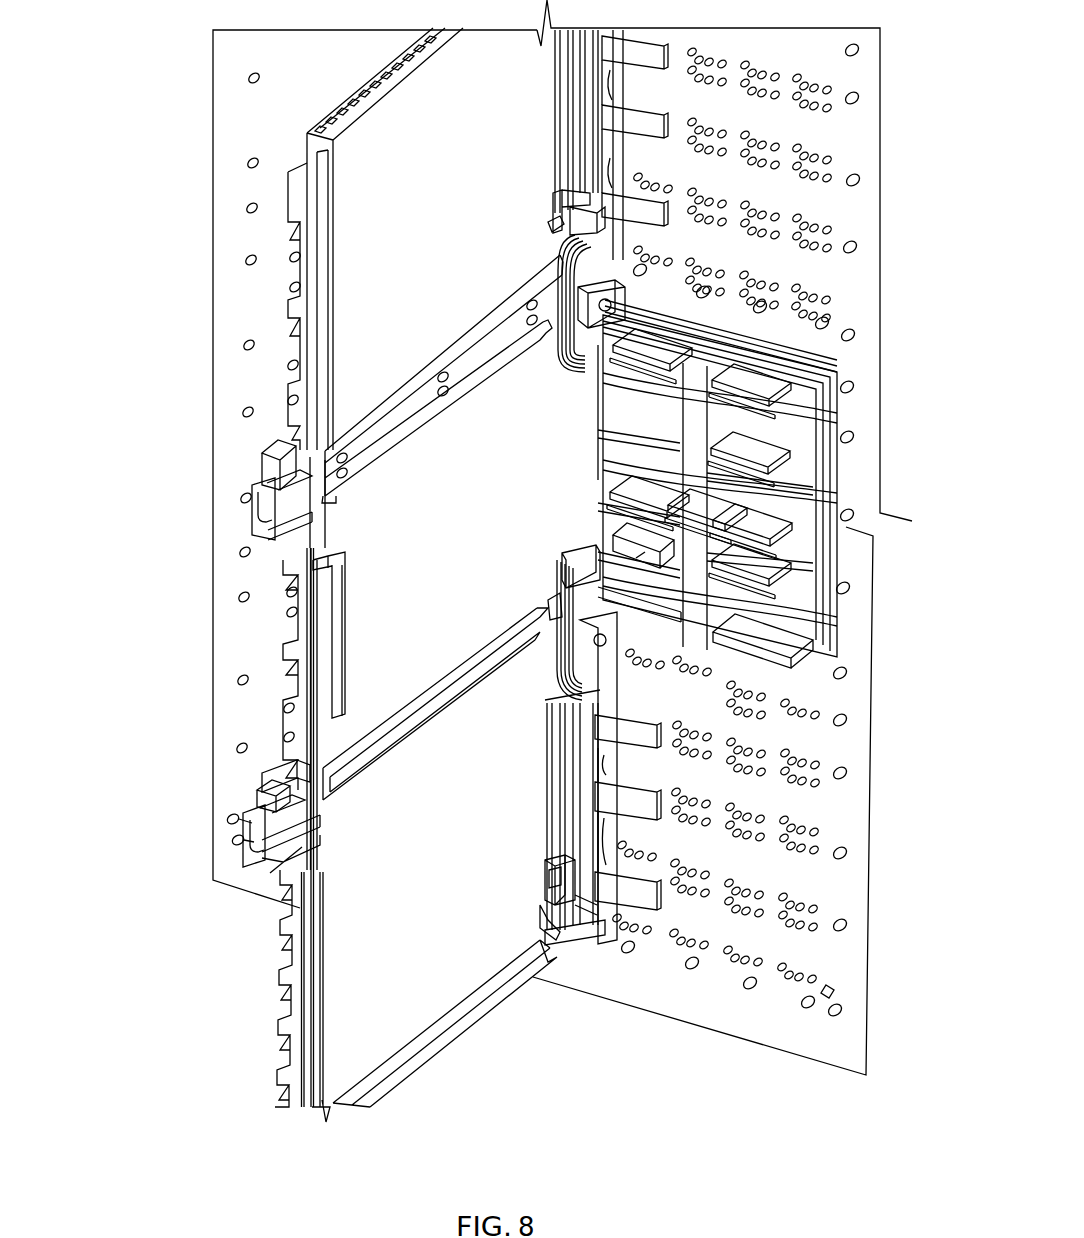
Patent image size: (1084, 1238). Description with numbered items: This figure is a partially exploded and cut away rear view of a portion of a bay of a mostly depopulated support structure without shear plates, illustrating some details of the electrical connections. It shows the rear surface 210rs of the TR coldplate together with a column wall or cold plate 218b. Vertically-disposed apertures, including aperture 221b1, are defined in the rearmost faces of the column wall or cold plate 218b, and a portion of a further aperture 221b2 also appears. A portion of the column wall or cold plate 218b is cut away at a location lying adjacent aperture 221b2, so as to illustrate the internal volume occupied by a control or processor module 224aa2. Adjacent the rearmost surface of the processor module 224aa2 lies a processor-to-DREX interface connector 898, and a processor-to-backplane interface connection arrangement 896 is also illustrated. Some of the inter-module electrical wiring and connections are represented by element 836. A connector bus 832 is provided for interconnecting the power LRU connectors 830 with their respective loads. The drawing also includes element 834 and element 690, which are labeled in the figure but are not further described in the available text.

The rear surface of the TR coldplate 210rs is at (235, 583).
The vertically-disposed aperture 221b1 is at (320, 204).
The processor-to-backplane interface connection arrangement 896 is at (422, 428).
The processor-to-DREX interface connector 898 is at (322, 674).
The aperture 221b2 is at (300, 628).
The column wall or cold plate 218b is at (347, 913).
The control or processor module 224aa2 is at (375, 714).
The inter-module electrical wiring and connections 836 is at (567, 663).
The vertical connector strips 834 is at (562, 788).
The power LRU connectors 830 is at (622, 890).
The connector bus 832 is at (587, 855).
The connector block 690 is at (640, 560).